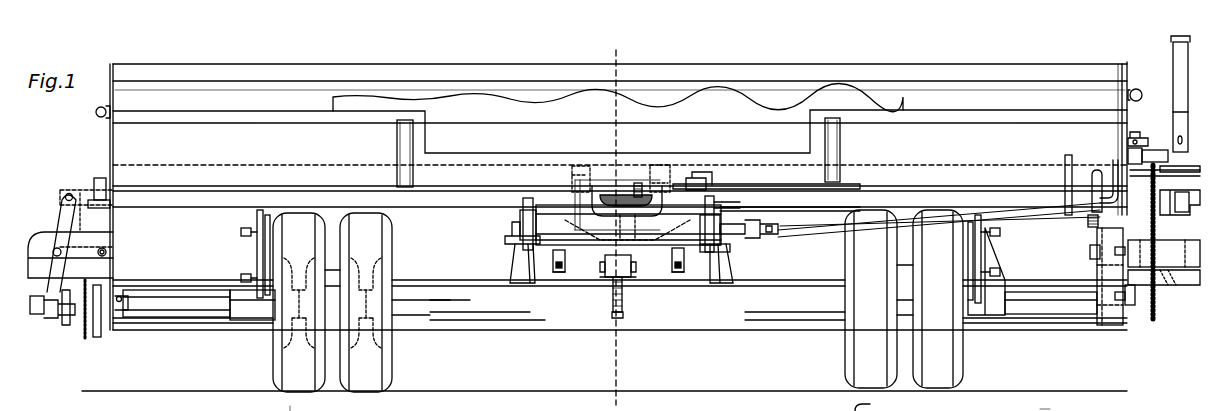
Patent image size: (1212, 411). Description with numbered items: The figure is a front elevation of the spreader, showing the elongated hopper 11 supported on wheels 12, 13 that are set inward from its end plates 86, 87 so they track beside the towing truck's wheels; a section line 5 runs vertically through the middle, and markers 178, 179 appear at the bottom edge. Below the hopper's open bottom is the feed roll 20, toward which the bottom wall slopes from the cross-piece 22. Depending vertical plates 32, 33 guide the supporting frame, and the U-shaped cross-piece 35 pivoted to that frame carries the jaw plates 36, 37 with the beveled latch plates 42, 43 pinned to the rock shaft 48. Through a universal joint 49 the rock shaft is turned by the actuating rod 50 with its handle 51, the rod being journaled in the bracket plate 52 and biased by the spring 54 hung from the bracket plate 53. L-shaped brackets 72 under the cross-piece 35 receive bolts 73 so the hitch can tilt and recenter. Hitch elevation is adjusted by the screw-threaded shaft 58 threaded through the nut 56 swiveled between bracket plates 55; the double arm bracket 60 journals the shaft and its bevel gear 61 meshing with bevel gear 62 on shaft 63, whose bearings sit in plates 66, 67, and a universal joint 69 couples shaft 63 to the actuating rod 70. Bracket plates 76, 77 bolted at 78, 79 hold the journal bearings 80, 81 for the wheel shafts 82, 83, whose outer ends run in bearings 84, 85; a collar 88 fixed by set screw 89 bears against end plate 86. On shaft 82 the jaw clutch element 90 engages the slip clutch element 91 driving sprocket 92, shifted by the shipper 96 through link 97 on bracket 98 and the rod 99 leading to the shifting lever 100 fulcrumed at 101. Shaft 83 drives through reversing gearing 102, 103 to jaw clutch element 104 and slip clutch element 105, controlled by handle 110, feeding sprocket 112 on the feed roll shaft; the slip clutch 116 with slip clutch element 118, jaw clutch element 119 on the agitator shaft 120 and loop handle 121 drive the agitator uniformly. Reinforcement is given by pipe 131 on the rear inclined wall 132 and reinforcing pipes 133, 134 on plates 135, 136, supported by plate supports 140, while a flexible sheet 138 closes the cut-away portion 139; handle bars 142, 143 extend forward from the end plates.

The section line 5- 5 is at (628, 399).
The hopper 11 is at (620, 246).
The wheel 12 is at (392, 235).
The wheel 13 is at (850, 345).
The feed roll 20 is at (690, 318).
The cross-piece 22 is at (483, 173).
The vertical plate 32 is at (520, 262).
The vertical plate 33 is at (720, 265).
The cross-piece 35 is at (560, 232).
The jaw plate 36 is at (520, 203).
The jaw plate 37 is at (714, 204).
The latch plate 42 is at (510, 243).
The latch plate 43 is at (714, 256).
The rock shaft 48 is at (557, 237).
The universal joint 49 is at (762, 238).
The actuating rod 50 is at (838, 228).
The handle 51 is at (1117, 190).
The bracket plate 52 is at (1065, 160).
The bracket plate 53 is at (1094, 205).
The spring 54 is at (1087, 225).
The bracket plate 55 is at (609, 272).
The nut 56 is at (614, 300).
The screw-threaded shaft 58 is at (619, 322).
The double arm bracket 60 is at (568, 192).
The bevel gear 61 is at (605, 196).
The bevel gear 62 is at (639, 190).
The shaft 63 is at (618, 195).
The plate 66 is at (588, 168).
The plate 67 is at (657, 165).
The universal joint 69 is at (697, 168).
The actuating rod 70 is at (782, 186).
The L-shaped bracket 72 is at (556, 264).
The bolt 73 is at (558, 270).
The bracket plate 76 is at (258, 212).
The bracket plate 77 is at (975, 248).
The bolt 78 is at (248, 275).
The bolt 79 is at (1008, 240).
The journal bearing 80 is at (245, 310).
The journal bearing 81 is at (998, 314).
The supporting wheel shaft 82 is at (177, 305).
The supporting wheel shaft 83 is at (1030, 305).
The bearing 84 is at (99, 322).
The bearing 85 is at (1132, 315).
The end plate 86 is at (113, 258).
The end plate 87 is at (1122, 85).
The collar 88 is at (125, 305).
The set screw 89 is at (121, 303).
The jaw clutch element 90 is at (52, 318).
The slip clutch element 91 is at (70, 322).
The sprocket 92 is at (86, 338).
The shipper 96 is at (62, 220).
The link 97 is at (78, 195).
The bracket 98 is at (113, 236).
The rod 99 is at (88, 185).
The shifting lever 100 is at (1176, 60).
The fulcrum 101 is at (1138, 130).
The reversing gearing 102 is at (1110, 325).
The reversing gearing 103 is at (1095, 256).
The jaw clutch element 104 is at (1165, 268).
The slip clutch element 105 is at (1160, 284).
The handle 110 is at (911, 407).
The sprocket 112 is at (1153, 322).
The slip clutch 116 is at (1174, 160).
The slip clutch element 118 is at (1162, 170).
The jaw clutch element 119 is at (1178, 180).
The shaft 120 is at (1182, 216).
The loop handle 121 is at (1172, 165).
The pipe 131 is at (305, 70).
The rear inclined wall 132 is at (382, 84).
The reinforcing pipe 133 is at (228, 117).
The reinforcing pipe 134 is at (962, 113).
The plate 135 is at (192, 140).
The plate 136 is at (987, 132).
The sheet 138 is at (340, 104).
The cut-away portion 139 is at (448, 140).
The plate support 140 is at (400, 145).
The handle bar 142 is at (95, 114).
The handle bar 143 is at (1137, 88).
The lever 178 is at (287, 408).
The lever 179 is at (1080, 409).